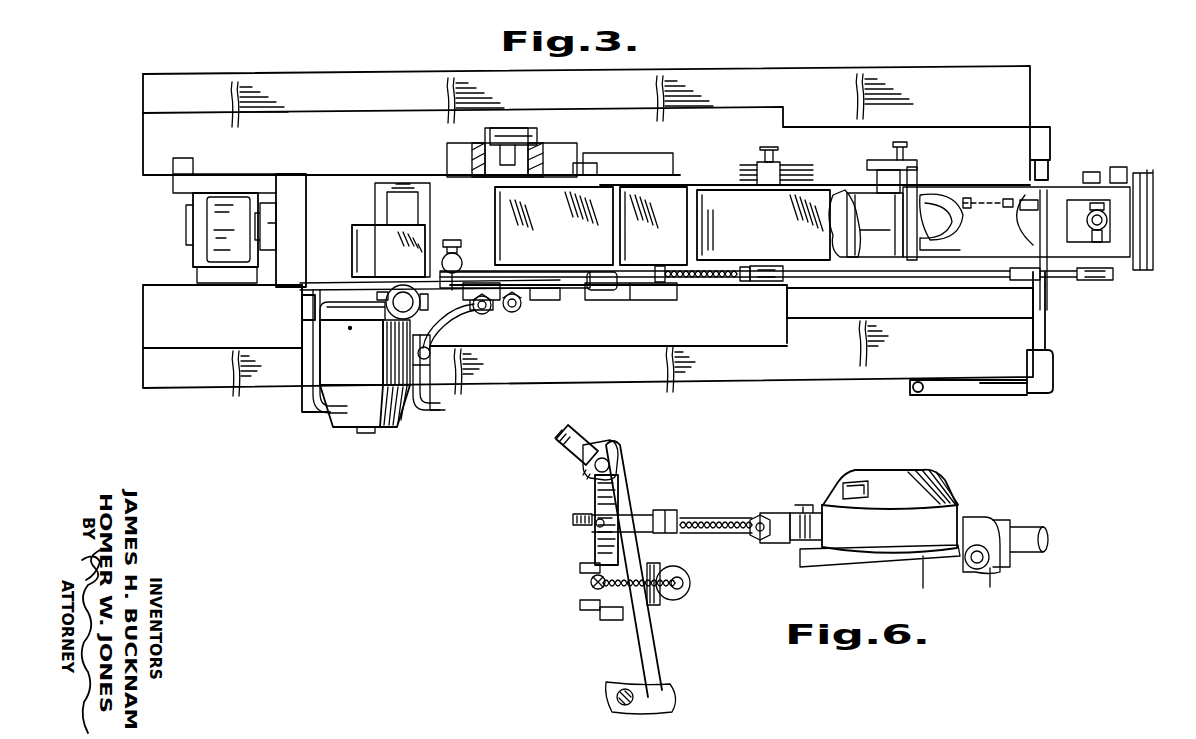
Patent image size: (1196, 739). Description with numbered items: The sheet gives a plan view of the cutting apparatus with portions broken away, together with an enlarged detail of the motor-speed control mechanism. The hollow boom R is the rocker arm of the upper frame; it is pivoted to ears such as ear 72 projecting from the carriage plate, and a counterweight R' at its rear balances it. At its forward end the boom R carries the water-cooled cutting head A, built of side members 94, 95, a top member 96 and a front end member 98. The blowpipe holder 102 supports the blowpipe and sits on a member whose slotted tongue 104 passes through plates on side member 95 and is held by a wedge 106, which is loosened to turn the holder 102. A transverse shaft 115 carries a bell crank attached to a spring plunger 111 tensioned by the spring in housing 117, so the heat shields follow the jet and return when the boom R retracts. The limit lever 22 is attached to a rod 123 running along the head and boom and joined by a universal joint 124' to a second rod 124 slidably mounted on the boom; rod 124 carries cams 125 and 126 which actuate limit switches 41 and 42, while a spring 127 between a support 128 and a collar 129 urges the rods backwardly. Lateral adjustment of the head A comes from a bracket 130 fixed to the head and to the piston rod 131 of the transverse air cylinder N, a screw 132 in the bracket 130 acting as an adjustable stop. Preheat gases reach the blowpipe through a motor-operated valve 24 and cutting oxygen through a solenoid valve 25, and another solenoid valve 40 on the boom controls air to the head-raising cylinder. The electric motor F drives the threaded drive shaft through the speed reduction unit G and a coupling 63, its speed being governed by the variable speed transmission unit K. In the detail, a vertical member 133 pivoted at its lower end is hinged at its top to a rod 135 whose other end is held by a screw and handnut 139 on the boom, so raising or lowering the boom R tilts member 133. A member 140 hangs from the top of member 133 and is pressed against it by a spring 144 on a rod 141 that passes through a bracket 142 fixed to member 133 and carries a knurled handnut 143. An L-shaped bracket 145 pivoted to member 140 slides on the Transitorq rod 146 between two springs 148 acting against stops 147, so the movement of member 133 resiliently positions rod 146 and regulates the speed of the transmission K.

In FIG. 3, the limit lever 22 is at (1115, 280).
In FIG. 3, the motor-operated valve 24 is at (362, 250).
In FIG. 3, the solenoid operated valve 25 is at (462, 250).
In FIG. 3, the solenoid valve 40 is at (433, 333).
In FIG. 3, the limit switch 41 is at (586, 265).
In FIG. 3, the limit switch 42 is at (630, 265).
In FIG. 3, the coupling 63 is at (268, 215).
In FIG. 3, the ear 72 is at (556, 145).
In FIG. 3, the side member 94 is at (973, 262).
In FIG. 3, the side member 95 is at (978, 178).
In FIG. 3, the top member 96 is at (953, 250).
In FIG. 3, the end member 98 is at (1127, 213).
In FIG. 3, the blowpipe holder 102 is at (1107, 230).
In FIG. 3, the slotted tongue 104 is at (1088, 178).
In FIG. 3, the key or wedge 106 is at (1097, 175).
In FIG. 3, the spring plunger 111 is at (985, 193).
In FIG. 3, the transverse shaft 115 is at (1042, 222).
In FIG. 3, the spring housing 117 is at (955, 205).
In FIG. 3, the rod 123 is at (811, 280).
In FIG. 3, the second rod 124 is at (631, 313).
In FIG. 3, the universal joint 124' is at (765, 294).
In FIG. 3, the cam 125 is at (528, 300).
In FIG. 3, the cam 126 is at (590, 293).
In FIG. 3, the spring 127 is at (710, 292).
In FIG. 3, the support 128 is at (712, 282).
In FIG. 3, the collar 129 is at (658, 290).
In FIG. 3, the bracket 130 is at (908, 165).
In FIG. 3, the piston rod 131 is at (868, 190).
In FIG. 3, the screw 132 is at (903, 144).
In FIG. 6, the vertical member 133 is at (647, 658).
In FIG. 6, the rod 135 is at (557, 447).
In FIG. 3, the handnut 139 is at (597, 160).
In FIG. 6, the member 140 is at (595, 490).
In FIG. 6, the rod 141 is at (588, 583).
In FIG. 6, the bracket 142 is at (653, 600).
In FIG. 6, the knurled handnut 143 is at (688, 587).
In FIG. 6, the spring 144 is at (605, 598).
In FIG. 6, the L-shaped bracket 145 is at (655, 510).
In FIG. 6, the Transitorq rod 146 is at (723, 517).
In FIG. 6, the stops 147 is at (573, 517).
In FIG. 6, the springs 148 is at (596, 526).
In FIG. 3, the speed reduction unit G is at (212, 211).
In FIG. 3, the rocker arm or boom R is at (763, 213).
In FIG. 3, the counterweight R' is at (239, 219).
In FIG. 3, the air cylinder N is at (857, 205).
In FIG. 6, the variable speed transmission unit K is at (947, 492).
In FIG. 3, the electric motor F is at (343, 377).
In FIG. 3, the cutting head A is at (1150, 293).